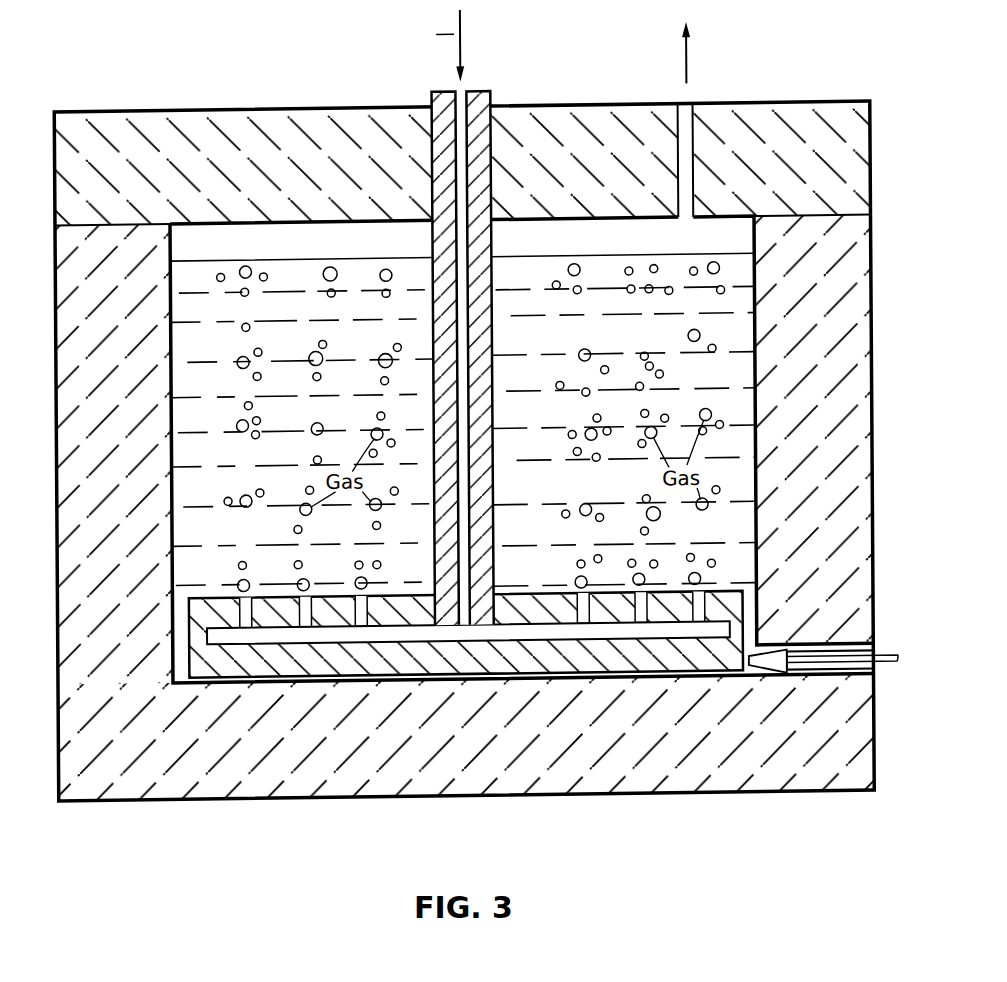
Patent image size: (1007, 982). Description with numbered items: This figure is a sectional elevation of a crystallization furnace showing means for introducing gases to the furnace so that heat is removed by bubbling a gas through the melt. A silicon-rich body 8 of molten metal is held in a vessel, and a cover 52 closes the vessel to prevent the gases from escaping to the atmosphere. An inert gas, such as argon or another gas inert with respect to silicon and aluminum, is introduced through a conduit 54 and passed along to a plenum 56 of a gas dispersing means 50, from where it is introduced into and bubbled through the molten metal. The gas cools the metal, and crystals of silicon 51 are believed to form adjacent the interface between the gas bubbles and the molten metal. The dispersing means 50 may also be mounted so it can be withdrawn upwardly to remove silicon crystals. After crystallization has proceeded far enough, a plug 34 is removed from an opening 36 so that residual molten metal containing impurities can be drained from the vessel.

The silicon-rich body of molten metal 8 is at (372, 348).
The plug 34 is at (779, 676).
The opening 36 is at (864, 654).
The gas dispersing means 50 is at (226, 672).
The crystals of silicon 51 is at (312, 460).
The cover 52 is at (190, 125).
The conduit 54 is at (464, 99).
The plenum 56 is at (288, 645).